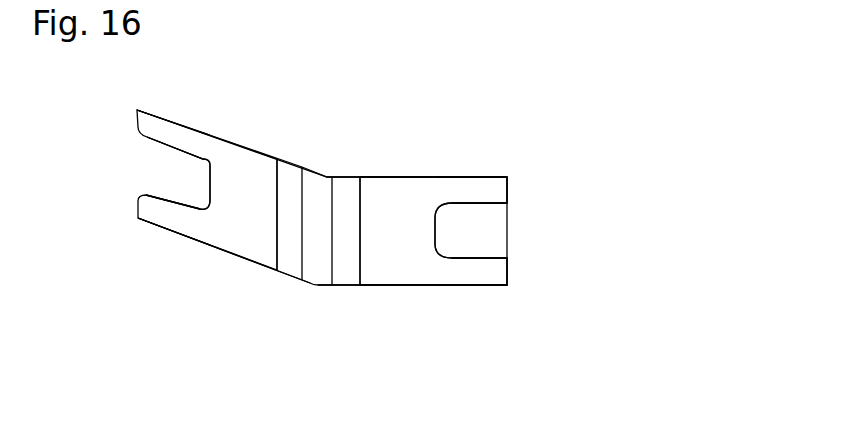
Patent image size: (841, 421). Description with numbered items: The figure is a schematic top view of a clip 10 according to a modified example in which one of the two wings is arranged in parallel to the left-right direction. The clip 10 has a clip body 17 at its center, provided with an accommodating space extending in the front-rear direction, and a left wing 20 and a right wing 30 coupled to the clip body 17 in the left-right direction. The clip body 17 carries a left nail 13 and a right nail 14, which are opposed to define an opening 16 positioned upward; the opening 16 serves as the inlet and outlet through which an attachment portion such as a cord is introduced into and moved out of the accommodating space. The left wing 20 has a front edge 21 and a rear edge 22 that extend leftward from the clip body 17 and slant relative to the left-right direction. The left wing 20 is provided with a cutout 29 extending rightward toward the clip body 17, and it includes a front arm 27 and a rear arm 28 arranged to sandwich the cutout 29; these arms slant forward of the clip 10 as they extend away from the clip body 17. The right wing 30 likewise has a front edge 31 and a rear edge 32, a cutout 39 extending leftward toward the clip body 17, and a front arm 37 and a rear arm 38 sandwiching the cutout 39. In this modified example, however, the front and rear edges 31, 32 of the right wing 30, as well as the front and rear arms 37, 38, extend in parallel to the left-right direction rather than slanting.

The clip 10 is at (66, 108).
The left nail 13 is at (285, 273).
The right nail 14 is at (352, 275).
The opening 16 is at (314, 198).
The clip body 17 is at (362, 325).
The left wing 20 is at (249, 223).
The front edge 21 is at (247, 144).
The rear edge 22 is at (218, 250).
The front arm 27 is at (176, 127).
The rear arm 28 is at (168, 229).
The cutout 29 is at (187, 191).
The right wing 30 is at (402, 247).
The front edge 31 is at (433, 172).
The rear edge 32 is at (405, 286).
The front arm 37 is at (483, 188).
The rear arm 38 is at (480, 278).
The cutout 39 is at (476, 247).